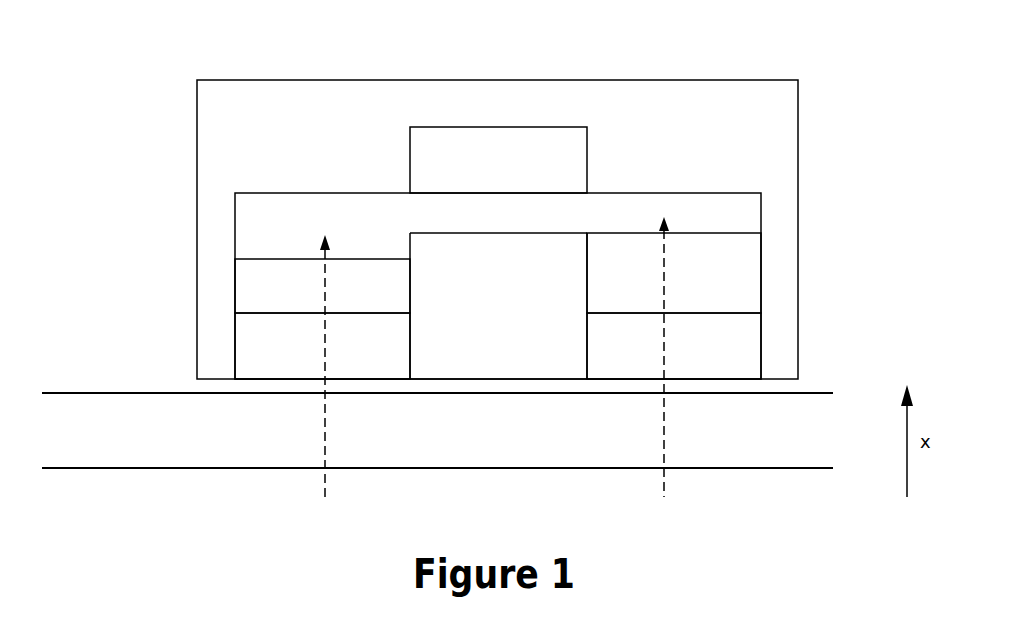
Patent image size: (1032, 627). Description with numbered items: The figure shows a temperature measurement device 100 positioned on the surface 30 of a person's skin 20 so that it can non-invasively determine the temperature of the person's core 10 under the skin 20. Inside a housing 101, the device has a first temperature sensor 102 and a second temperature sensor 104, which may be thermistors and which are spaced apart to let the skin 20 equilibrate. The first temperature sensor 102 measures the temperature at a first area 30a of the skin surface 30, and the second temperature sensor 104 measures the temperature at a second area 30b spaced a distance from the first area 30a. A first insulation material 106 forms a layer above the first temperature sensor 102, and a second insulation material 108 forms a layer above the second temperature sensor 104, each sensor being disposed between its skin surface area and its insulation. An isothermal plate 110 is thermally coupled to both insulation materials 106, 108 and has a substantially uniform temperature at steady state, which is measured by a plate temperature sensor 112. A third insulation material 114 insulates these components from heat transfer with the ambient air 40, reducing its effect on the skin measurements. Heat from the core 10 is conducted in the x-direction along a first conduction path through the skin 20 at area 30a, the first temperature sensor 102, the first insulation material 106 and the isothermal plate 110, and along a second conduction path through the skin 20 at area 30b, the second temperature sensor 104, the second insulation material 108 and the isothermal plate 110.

The temperature measurement device 100 is at (227, 50).
The housing 101 is at (765, 80).
The third insulation material 114 is at (578, 110).
The plate temperature sensor 112 is at (553, 186).
The isothermal plate 110 is at (603, 224).
The first insulation material 106 is at (342, 309).
The second insulation material 108 is at (694, 299).
The first temperature sensor 102 is at (342, 372).
The second temperature sensor 104 is at (694, 372).
The ambient air 40 is at (43, 279).
The skin surface 30 is at (125, 389).
The skin 20 is at (92, 446).
The core 10 is at (97, 512).
The first area of the skin surface 30a is at (338, 394).
The second area of the skin surface 30b is at (687, 394).